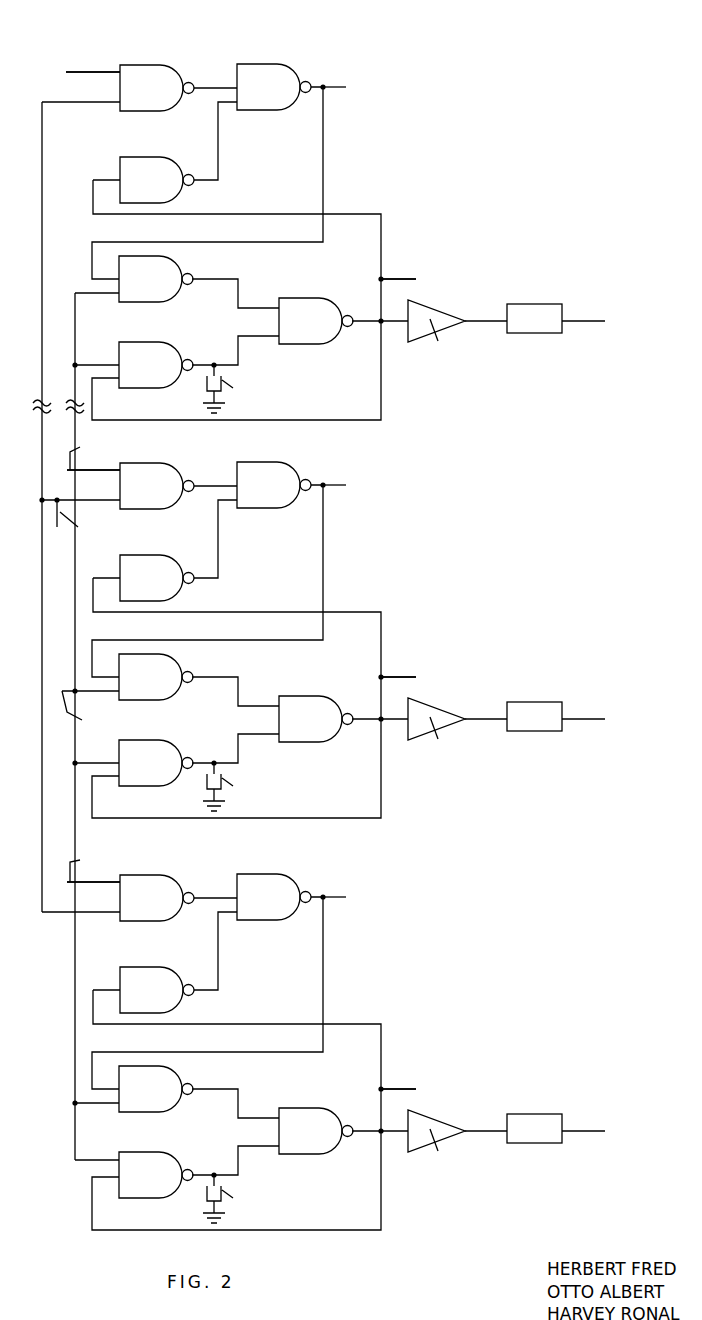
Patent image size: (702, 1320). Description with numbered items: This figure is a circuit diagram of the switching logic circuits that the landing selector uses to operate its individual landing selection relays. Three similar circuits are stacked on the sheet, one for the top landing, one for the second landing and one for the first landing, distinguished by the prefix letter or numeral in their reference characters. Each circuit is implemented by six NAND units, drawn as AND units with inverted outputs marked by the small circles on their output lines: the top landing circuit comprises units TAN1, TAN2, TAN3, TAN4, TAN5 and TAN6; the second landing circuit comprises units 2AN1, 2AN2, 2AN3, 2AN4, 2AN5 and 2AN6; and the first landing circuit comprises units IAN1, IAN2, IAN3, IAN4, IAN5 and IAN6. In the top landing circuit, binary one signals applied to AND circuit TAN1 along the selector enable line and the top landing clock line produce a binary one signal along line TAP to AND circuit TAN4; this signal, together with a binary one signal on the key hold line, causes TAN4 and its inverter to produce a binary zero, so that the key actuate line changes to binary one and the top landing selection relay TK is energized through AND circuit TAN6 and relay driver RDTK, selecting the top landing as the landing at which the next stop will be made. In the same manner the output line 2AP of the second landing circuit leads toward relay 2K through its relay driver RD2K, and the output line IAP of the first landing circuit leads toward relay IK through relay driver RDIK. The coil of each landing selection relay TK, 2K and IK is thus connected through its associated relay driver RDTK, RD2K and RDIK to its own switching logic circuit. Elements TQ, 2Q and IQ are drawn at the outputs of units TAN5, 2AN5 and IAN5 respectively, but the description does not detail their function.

The top landing AND circuit TAN1 is at (157, 88).
The top landing NAND unit TAN2 is at (157, 180).
The top landing NAND unit TAN3 is at (274, 87).
The top landing AND circuit TAN4 is at (156, 279).
The top landing NAND unit TAN5 is at (156, 365).
The top landing AND circuit TAN6 is at (316, 321).
The line TAP is at (351, 88).
The relay driver circuit RDTK is at (437, 331).
The top landing selection relay TK is at (534, 318).
The T-phase timing capacitor TQ is at (229, 389).
The second landing NAND unit 2AN1 is at (157, 486).
The second landing NAND unit 2AN2 is at (157, 578).
The second landing NAND unit 2AN3 is at (274, 485).
The second landing NAND unit 2AN4 is at (156, 677).
The second landing NAND unit 2AN5 is at (156, 763).
The second landing NAND unit 2AN6 is at (316, 719).
The second landing line AP 2AP is at (353, 486).
The relay driver circuit RD2K is at (437, 729).
The second landing selection relay 2K is at (534, 716).
The 2-phase timing capacitor 2Q is at (229, 787).
The first landing NAND unit IAN1 is at (157, 898).
The first landing NAND unit IAN2 is at (157, 990).
The first landing NAND unit IAN3 is at (274, 897).
The first landing NAND unit IAN4 is at (156, 1089).
The first landing NAND unit IAN5 is at (156, 1175).
The first landing NAND unit IAN6 is at (316, 1131).
The first landing line AP IAP is at (350, 898).
The relay driver circuit RDIK is at (436, 1141).
The first landing selection relay IK is at (534, 1128).
The 1-phase timing capacitor IQ is at (227, 1199).